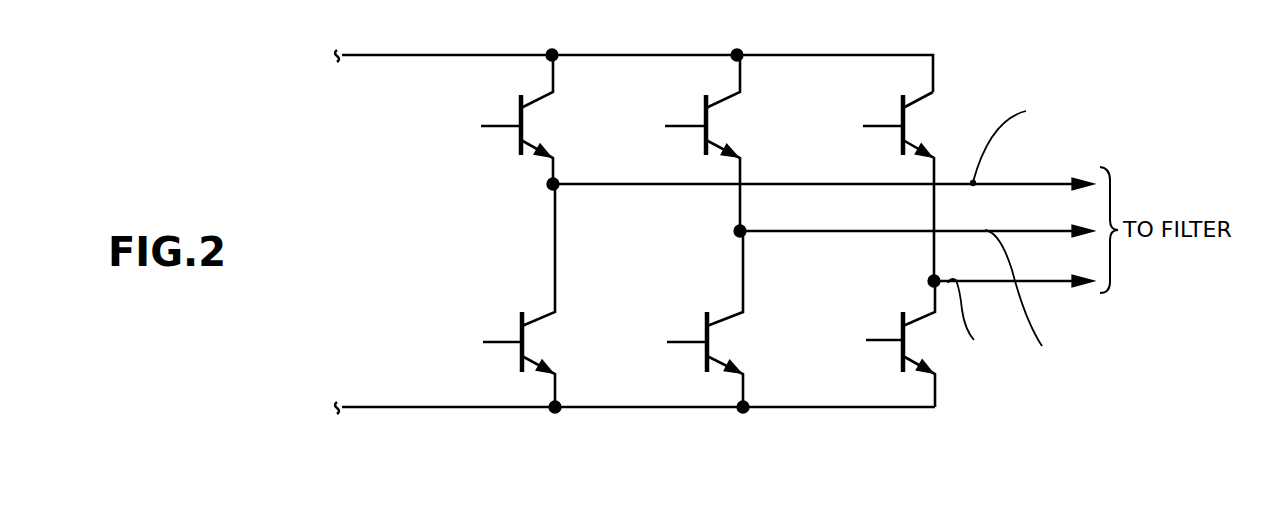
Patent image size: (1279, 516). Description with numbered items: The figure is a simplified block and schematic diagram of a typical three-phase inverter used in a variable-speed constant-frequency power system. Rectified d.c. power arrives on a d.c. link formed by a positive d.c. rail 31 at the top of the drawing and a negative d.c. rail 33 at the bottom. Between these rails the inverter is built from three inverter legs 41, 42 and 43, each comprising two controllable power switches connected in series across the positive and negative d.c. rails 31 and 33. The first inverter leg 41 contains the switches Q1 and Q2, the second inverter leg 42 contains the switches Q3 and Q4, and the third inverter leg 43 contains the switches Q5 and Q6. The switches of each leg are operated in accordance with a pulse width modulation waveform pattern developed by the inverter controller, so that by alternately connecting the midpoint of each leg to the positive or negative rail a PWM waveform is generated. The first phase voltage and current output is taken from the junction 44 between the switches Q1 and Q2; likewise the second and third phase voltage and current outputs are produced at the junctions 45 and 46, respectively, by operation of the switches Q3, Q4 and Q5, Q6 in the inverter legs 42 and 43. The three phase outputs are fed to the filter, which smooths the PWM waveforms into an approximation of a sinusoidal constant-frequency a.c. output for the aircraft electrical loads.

The positive d.c. rail 31 is at (386, 60).
The negative d.c. rail 33 is at (409, 408).
The inverter leg 41 is at (529, 231).
The inverter leg 42 is at (706, 231).
The inverter leg 43 is at (905, 249).
The junction 44 is at (553, 187).
The junction 45 is at (740, 233).
The junction 46 is at (934, 281).
The controllable power switch Q1 is at (524, 118).
The controllable power switch Q2 is at (522, 352).
The controllable power switch Q3 is at (709, 118).
The controllable power switch Q4 is at (707, 352).
The controllable power switch Q5 is at (906, 119).
The controllable power switch Q6 is at (903, 352).